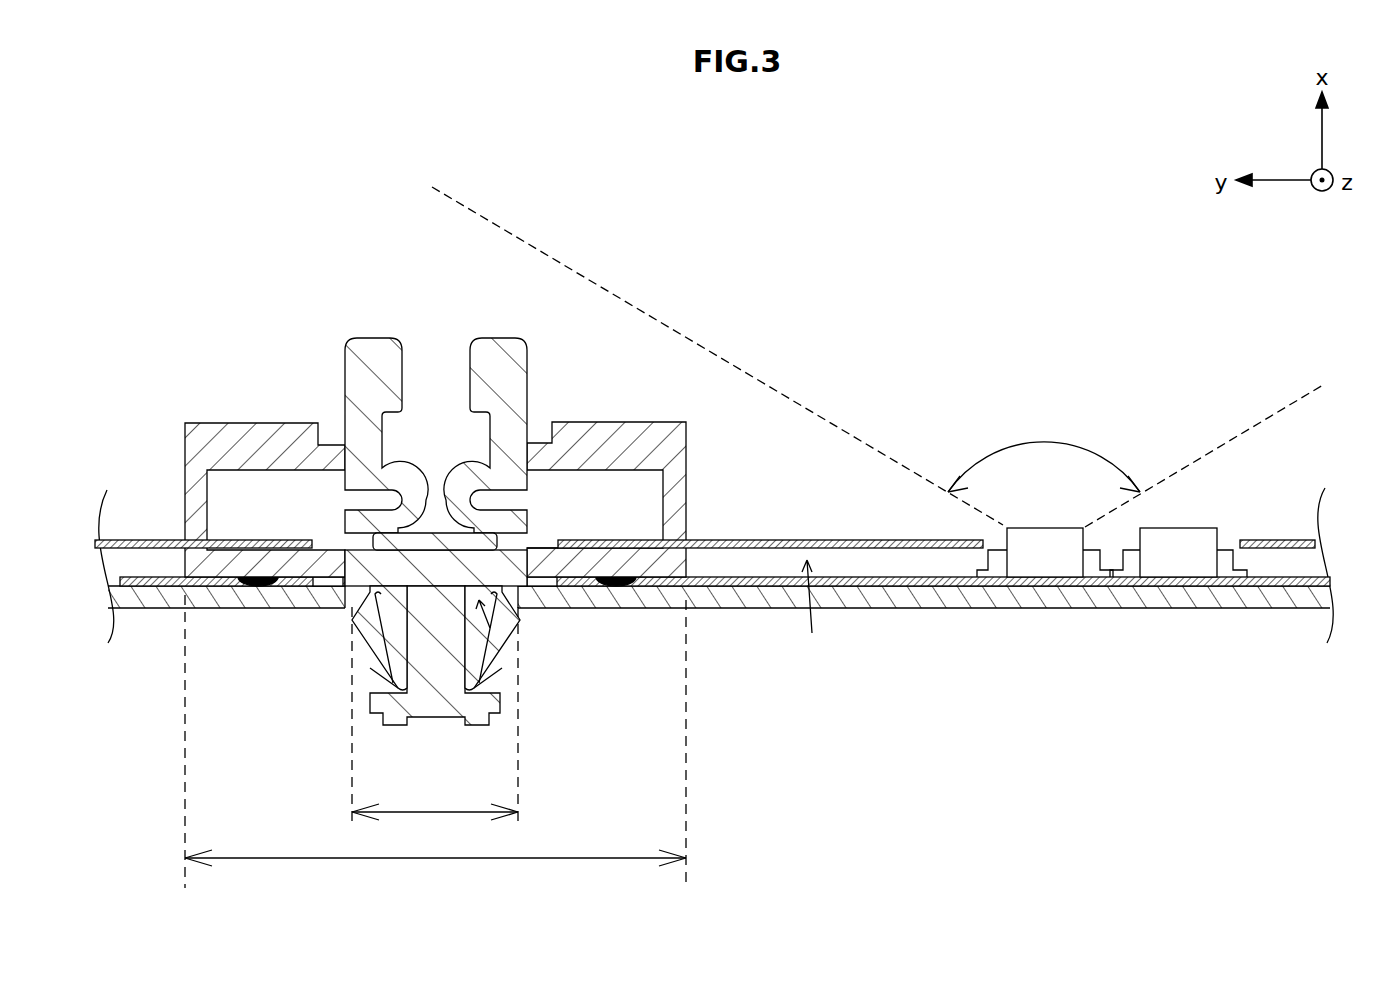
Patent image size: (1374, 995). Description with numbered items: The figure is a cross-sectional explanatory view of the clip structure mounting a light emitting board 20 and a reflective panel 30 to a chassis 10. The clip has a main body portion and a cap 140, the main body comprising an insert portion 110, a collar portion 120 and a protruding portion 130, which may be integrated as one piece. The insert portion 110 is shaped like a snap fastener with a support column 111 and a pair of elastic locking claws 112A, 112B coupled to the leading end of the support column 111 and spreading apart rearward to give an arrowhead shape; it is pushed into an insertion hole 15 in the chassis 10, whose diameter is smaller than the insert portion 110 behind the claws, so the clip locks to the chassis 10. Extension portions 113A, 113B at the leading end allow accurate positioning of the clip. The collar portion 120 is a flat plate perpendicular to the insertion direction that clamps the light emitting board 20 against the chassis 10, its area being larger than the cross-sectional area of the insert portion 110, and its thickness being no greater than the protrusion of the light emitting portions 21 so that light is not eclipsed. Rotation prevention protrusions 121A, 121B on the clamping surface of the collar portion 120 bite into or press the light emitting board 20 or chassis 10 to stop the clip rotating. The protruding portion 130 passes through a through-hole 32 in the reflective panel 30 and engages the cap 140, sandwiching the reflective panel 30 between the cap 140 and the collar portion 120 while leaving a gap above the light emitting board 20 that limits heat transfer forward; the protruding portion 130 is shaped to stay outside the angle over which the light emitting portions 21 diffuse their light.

The chassis 10 is at (915, 608).
The light emitting board 20 is at (1060, 586).
The light emitting portions 21 is at (1043, 528).
The reflective panel 30 is at (770, 540).
The through-hole 32 is at (554, 531).
The insert portion 110 is at (435, 722).
The support column 111 is at (360, 640).
The locking claw 112A is at (360, 668).
The locking claw 112B is at (515, 668).
The extension portion 113A is at (360, 700).
The extension portion 113B is at (515, 700).
The insertion hole 15 is at (515, 640).
The collar portion 120 is at (176, 607).
The rotation prevention protrusion 121A is at (248, 588).
The rotation prevention protrusion 121B is at (628, 588).
The protruding portion 130 is at (436, 528).
The cap 140 is at (615, 422).